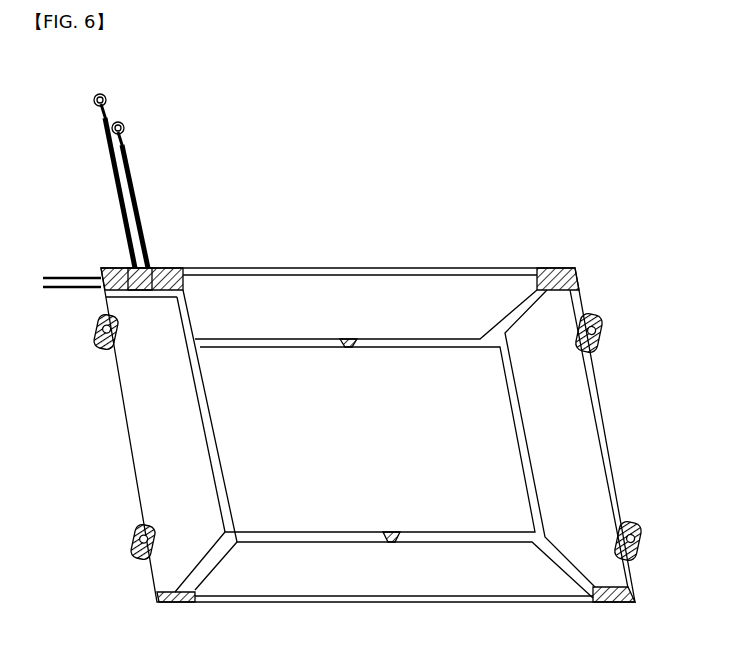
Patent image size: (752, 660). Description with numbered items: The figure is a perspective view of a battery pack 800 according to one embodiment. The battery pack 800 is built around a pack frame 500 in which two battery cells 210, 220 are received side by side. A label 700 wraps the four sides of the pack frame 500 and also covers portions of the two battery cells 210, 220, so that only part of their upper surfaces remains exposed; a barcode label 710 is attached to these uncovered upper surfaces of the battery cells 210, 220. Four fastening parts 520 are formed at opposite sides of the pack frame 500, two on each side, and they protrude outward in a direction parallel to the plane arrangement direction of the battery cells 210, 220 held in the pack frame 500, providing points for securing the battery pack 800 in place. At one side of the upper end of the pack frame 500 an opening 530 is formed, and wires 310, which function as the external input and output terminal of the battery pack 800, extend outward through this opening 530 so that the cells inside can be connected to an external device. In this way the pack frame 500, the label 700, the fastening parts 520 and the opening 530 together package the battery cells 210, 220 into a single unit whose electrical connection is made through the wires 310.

The battery pack 800 is at (231, 123).
The wires 310 is at (100, 169).
The opening 530 is at (150, 268).
The pack frame 500 is at (574, 268).
The fastening parts 520 is at (95, 330).
The label 700 is at (578, 463).
The barcode label 710 is at (418, 505).
The battery cell 210 is at (190, 590).
The battery cell 220 is at (613, 588).